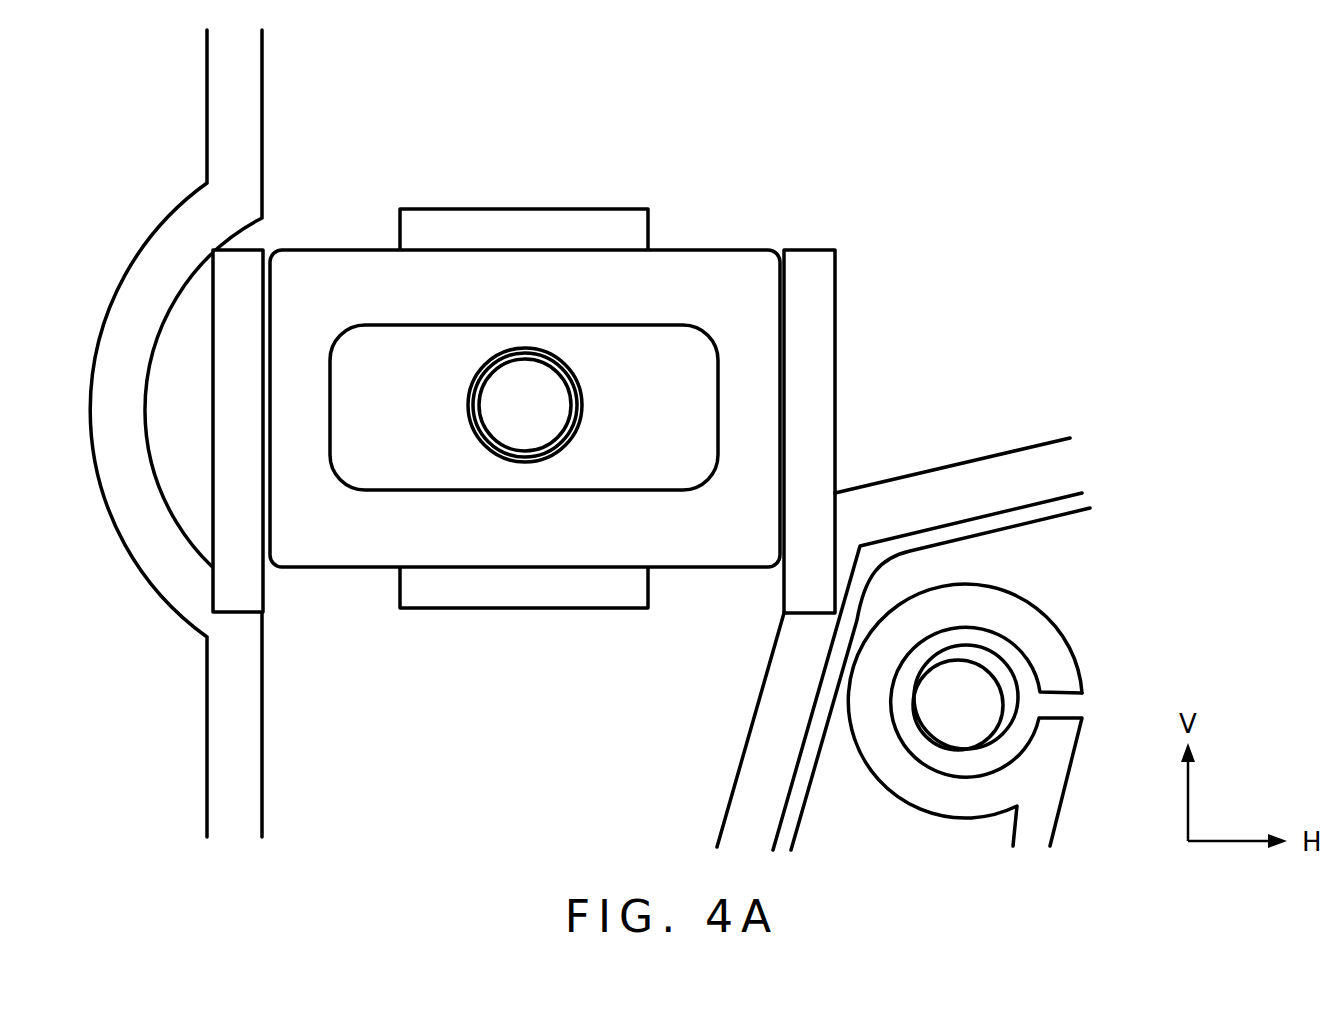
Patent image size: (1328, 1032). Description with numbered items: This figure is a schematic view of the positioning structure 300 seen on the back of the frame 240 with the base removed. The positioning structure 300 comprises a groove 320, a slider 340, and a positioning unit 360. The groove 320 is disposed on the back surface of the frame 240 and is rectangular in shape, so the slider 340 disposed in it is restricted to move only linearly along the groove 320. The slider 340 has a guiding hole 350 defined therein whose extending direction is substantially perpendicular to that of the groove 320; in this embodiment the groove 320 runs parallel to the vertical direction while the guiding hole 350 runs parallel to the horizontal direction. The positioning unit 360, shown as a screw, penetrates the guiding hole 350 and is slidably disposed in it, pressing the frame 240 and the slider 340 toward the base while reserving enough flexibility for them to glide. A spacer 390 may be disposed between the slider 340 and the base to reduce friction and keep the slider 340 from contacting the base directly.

The frame 240 is at (370, 124).
The positioning structure 300 is at (575, 420).
The groove 320 is at (692, 610).
The slider 340 is at (505, 290).
The guiding hole 350 is at (702, 357).
The positioning unit 360 is at (503, 421).
The spacer 390 is at (562, 223).